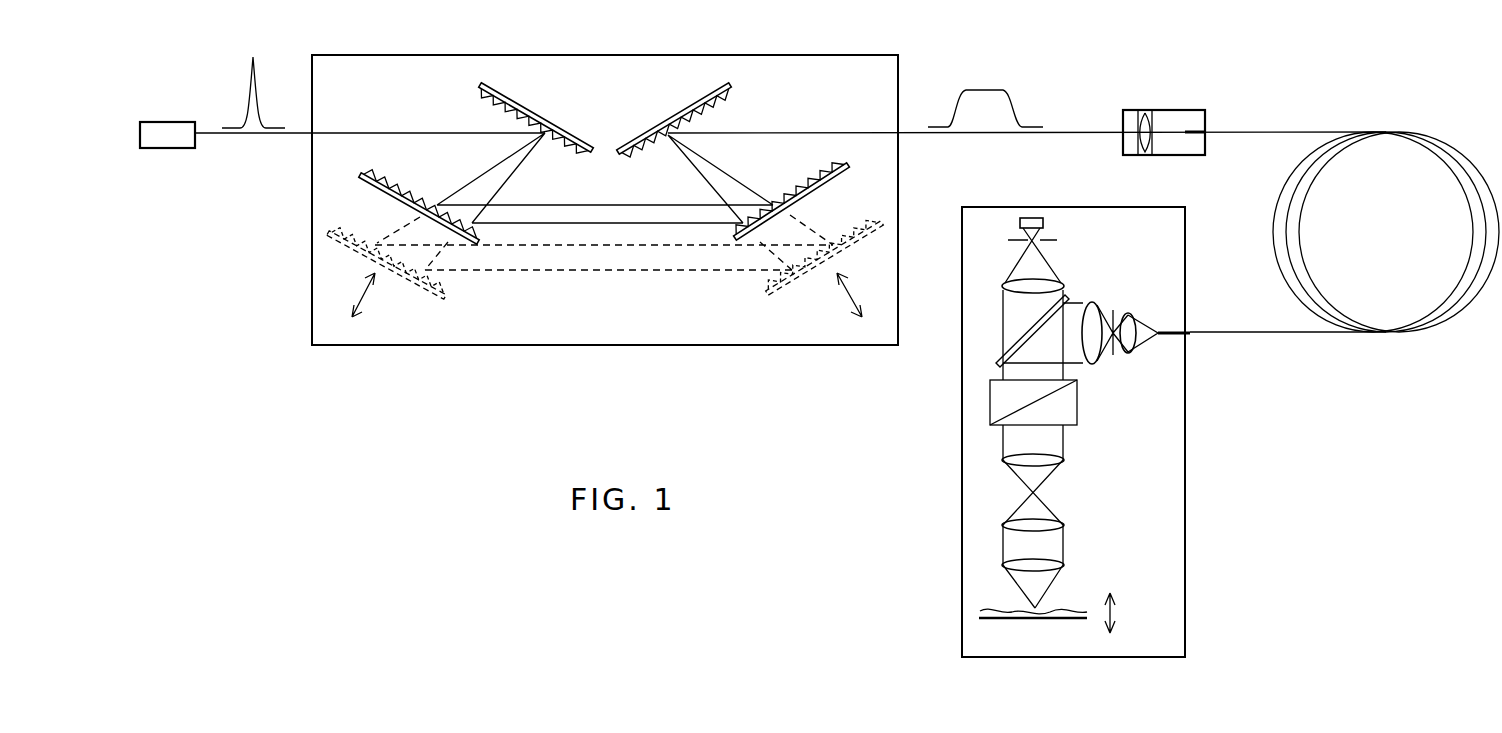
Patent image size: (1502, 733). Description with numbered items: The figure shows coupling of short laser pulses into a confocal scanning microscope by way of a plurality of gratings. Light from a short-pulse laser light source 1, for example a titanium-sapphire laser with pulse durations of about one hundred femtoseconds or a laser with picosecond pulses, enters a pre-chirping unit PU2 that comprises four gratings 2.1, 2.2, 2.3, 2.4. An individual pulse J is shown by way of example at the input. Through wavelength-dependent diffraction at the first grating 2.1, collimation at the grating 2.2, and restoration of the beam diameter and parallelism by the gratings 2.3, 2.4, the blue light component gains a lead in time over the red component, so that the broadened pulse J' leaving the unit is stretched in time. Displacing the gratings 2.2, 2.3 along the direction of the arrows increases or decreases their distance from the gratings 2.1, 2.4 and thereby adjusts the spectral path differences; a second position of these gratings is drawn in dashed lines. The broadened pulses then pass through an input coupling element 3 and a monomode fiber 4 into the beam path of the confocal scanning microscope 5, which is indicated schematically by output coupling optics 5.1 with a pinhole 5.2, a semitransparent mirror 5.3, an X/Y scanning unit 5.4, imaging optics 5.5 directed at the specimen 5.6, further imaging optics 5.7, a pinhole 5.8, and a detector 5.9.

The short-pulse laser light source 1 is at (181, 150).
The first grating 2.1 is at (515, 95).
The second grating 2.2 is at (397, 177).
The third grating 2.3 is at (817, 193).
The fourth grating 2.4 is at (678, 112).
The pre-chirping unit PU2 is at (697, 347).
The individual pulse J is at (253, 73).
The broadened laser pulse J' is at (985, 87).
The input coupling element 3 is at (1190, 110).
The monomode fiber 4 is at (1285, 335).
The confocal scanning microscope 5 is at (1185, 483).
The output coupling optics 5.1 is at (1095, 368).
The pinhole 5.2 is at (1113, 310).
The semitransparent mirror 5.3 is at (1010, 345).
The X/Y scanning unit 5.4 is at (1078, 420).
The imaging optics 5.5 is at (1065, 565).
The specimen 5.6 is at (995, 622).
The imaging optics 5.7 is at (1005, 282).
The pinhole 5.8 is at (1060, 240).
The detector 5.9 is at (1045, 222).